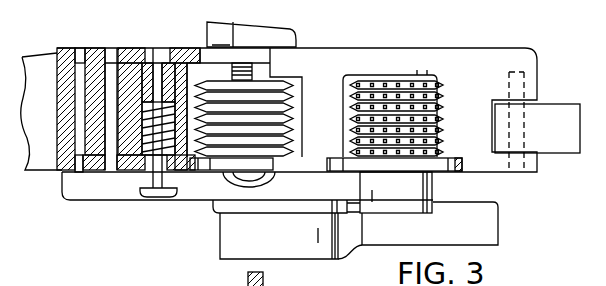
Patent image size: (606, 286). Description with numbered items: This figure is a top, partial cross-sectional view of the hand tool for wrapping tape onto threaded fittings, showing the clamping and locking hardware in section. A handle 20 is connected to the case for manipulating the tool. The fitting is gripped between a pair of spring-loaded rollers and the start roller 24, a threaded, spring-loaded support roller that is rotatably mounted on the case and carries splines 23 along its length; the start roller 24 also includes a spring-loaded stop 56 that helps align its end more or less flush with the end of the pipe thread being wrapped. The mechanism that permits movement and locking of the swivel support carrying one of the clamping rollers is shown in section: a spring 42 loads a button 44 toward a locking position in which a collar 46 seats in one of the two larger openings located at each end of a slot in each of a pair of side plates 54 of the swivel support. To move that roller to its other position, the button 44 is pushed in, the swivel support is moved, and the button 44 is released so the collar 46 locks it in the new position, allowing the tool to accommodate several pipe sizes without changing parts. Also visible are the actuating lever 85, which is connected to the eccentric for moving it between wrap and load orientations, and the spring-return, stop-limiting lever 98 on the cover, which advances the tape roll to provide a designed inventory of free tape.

The handle 20 is at (552, 146).
The splines 23 is at (397, 88).
The start roller 24 is at (218, 283).
The spring 42 is at (133, 155).
The button 44 is at (163, 200).
The collar 46 is at (150, 175).
The side plates 54 is at (188, 48).
The spring-loaded stop 56 is at (463, 174).
The actuating lever 85 is at (296, 33).
The stop-limiting lever 98 is at (488, 235).